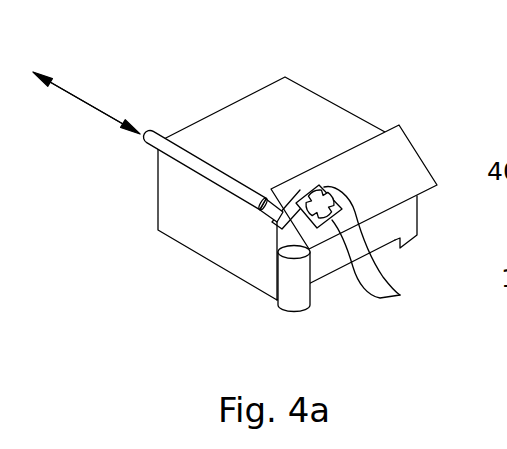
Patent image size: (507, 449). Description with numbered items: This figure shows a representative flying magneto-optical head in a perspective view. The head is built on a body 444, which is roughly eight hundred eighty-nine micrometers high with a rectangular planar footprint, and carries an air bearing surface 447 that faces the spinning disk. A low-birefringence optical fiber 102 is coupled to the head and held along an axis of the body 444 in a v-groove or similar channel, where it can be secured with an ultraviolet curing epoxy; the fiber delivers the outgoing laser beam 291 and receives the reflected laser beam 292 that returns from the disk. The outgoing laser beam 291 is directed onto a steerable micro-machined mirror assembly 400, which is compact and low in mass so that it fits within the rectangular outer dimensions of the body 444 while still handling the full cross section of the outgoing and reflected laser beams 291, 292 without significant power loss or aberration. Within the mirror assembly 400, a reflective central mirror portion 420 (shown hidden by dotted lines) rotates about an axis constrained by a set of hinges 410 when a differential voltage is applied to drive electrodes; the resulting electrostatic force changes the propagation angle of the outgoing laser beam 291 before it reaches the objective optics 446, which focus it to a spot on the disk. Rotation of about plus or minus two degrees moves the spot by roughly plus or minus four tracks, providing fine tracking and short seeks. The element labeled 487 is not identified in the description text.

The low-birefringence optical fiber 102 is at (158, 135).
The outgoing laser beam 291 is at (86, 103).
The reflected laser beam 292 is at (78, 91).
The steerable micro-machined mirror assembly 400 is at (411, 140).
The hinges 410 is at (400, 295).
The reflective central mirror portion 420 is at (308, 218).
The body 444 is at (183, 203).
The objective optics 446 is at (287, 280).
The air bearing surface 447 is at (392, 250).
The base edge 487 is at (321, 288).